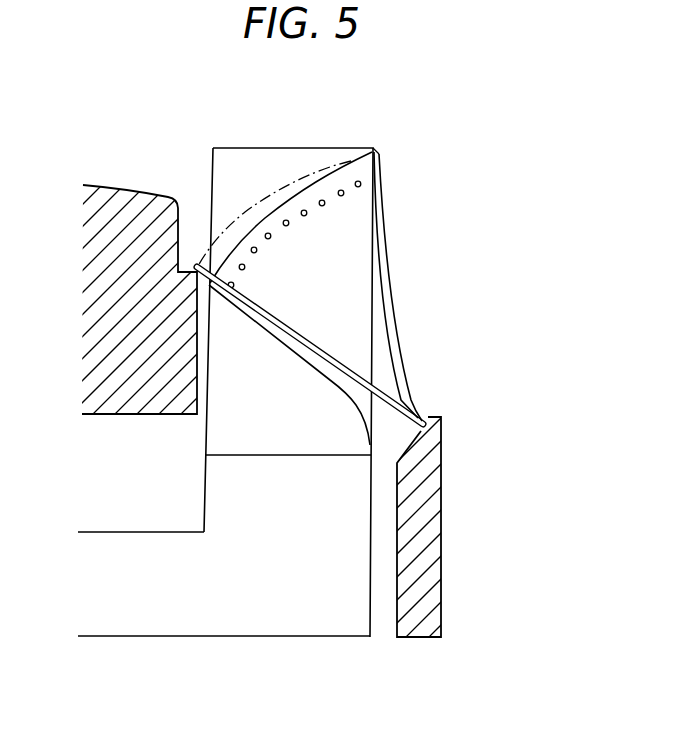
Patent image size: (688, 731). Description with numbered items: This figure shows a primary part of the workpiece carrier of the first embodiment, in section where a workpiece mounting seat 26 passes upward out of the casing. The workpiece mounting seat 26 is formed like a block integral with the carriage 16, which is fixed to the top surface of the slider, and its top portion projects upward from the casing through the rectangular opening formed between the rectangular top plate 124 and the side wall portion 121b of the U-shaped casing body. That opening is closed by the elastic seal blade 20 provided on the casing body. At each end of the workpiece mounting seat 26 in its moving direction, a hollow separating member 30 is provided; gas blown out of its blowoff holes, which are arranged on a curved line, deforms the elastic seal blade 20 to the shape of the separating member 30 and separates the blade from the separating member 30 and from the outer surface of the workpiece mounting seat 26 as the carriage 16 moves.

The rectangular top plate 124 is at (125, 195).
The separating member 30 is at (285, 157).
The elastic seal blade 20 is at (390, 303).
The workpiece mounting seat 26 is at (230, 490).
The carriage 16 is at (252, 614).
The side wall portion 121b is at (432, 522).